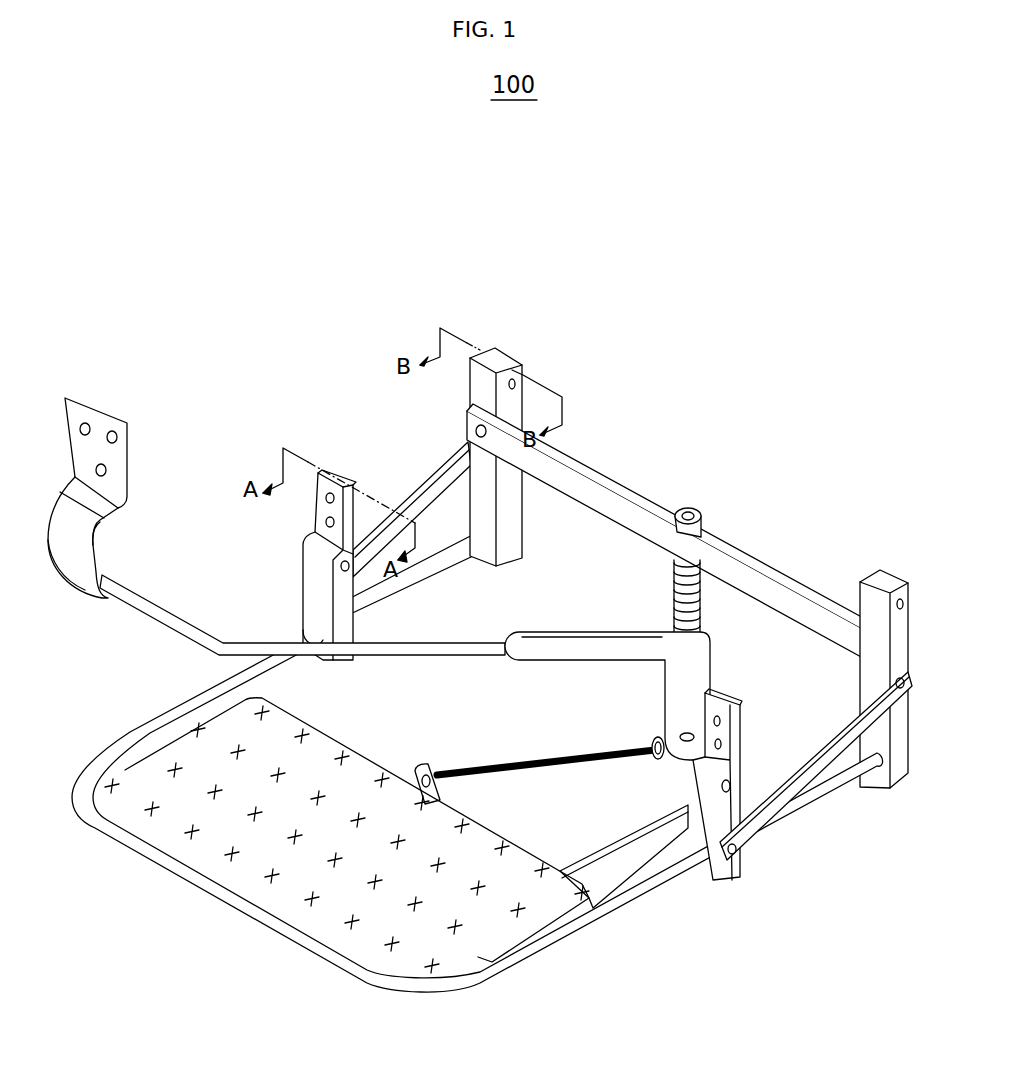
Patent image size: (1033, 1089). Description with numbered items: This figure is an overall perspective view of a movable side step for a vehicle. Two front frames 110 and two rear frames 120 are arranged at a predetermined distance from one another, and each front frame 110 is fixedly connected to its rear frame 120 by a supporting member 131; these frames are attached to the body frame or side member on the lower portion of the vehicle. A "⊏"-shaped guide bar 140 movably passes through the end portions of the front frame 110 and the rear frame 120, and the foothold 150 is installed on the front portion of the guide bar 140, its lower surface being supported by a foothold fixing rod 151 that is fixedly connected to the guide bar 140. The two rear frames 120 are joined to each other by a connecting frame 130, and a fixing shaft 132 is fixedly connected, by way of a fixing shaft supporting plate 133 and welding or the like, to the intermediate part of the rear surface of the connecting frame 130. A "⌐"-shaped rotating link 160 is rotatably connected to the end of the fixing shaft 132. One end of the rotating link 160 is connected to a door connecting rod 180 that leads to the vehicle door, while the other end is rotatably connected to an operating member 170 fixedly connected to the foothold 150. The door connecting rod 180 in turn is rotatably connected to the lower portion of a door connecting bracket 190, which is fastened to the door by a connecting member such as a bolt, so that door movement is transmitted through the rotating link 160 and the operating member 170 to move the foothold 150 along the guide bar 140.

The front frame 110 is at (337, 490).
The rear frame 120 is at (528, 356).
The connecting frame 130 is at (600, 483).
The supporting member 131 is at (787, 792).
The fixing shaft 132 is at (676, 593).
The fixing shaft supporting plate 133 is at (702, 517).
The guide bar 140 is at (663, 877).
The foothold 150 is at (285, 908).
The foothold fixing rod 151 is at (620, 850).
The rotating link 160 is at (703, 677).
The operating member 170 is at (487, 760).
The door connecting rod 180 is at (277, 645).
The door connecting bracket 190 is at (95, 418).